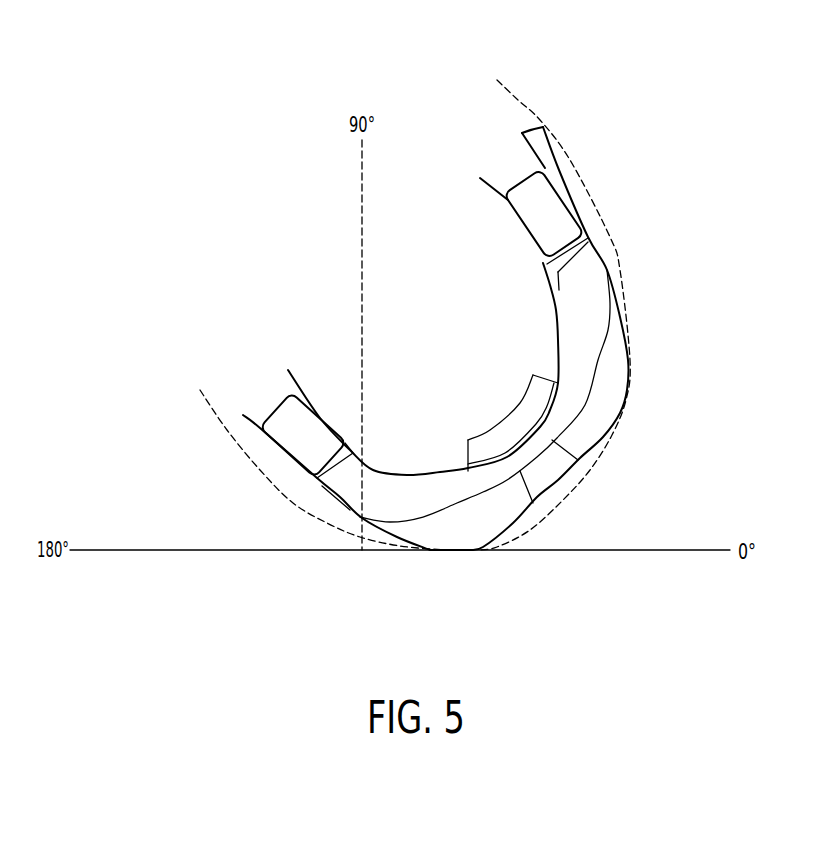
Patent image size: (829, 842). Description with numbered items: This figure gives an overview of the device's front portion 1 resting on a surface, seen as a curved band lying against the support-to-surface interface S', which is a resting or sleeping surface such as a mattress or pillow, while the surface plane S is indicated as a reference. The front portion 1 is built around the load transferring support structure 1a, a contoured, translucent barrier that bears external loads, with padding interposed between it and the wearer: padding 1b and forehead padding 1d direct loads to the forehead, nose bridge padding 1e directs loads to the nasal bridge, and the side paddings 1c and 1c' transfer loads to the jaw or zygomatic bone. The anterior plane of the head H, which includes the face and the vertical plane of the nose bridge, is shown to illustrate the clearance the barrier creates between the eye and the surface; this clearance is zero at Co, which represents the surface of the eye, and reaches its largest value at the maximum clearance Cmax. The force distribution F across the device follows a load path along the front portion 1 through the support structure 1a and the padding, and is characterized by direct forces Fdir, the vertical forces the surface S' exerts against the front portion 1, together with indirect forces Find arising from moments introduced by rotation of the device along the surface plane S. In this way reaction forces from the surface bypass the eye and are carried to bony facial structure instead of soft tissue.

The front portion 1 is at (533, 126).
The load transferring support structure 1a is at (513, 525).
The padding 1b is at (577, 277).
The side padding 1c is at (294, 448).
The side padding 1c' is at (571, 213).
The forehead padding 1d is at (527, 424).
The nose bridge padding 1e is at (548, 478).
The anterior plane of the head H is at (465, 467).
The force distribution F is at (554, 308).
The indirect forces Find is at (651, 285).
The direct forces Fdir is at (457, 576).
The surface plane S is at (294, 500).
The support-to-surface interface S' is at (422, 581).
The zero clearance Co is at (482, 179).
The maximum clearance Cmax is at (615, 425).